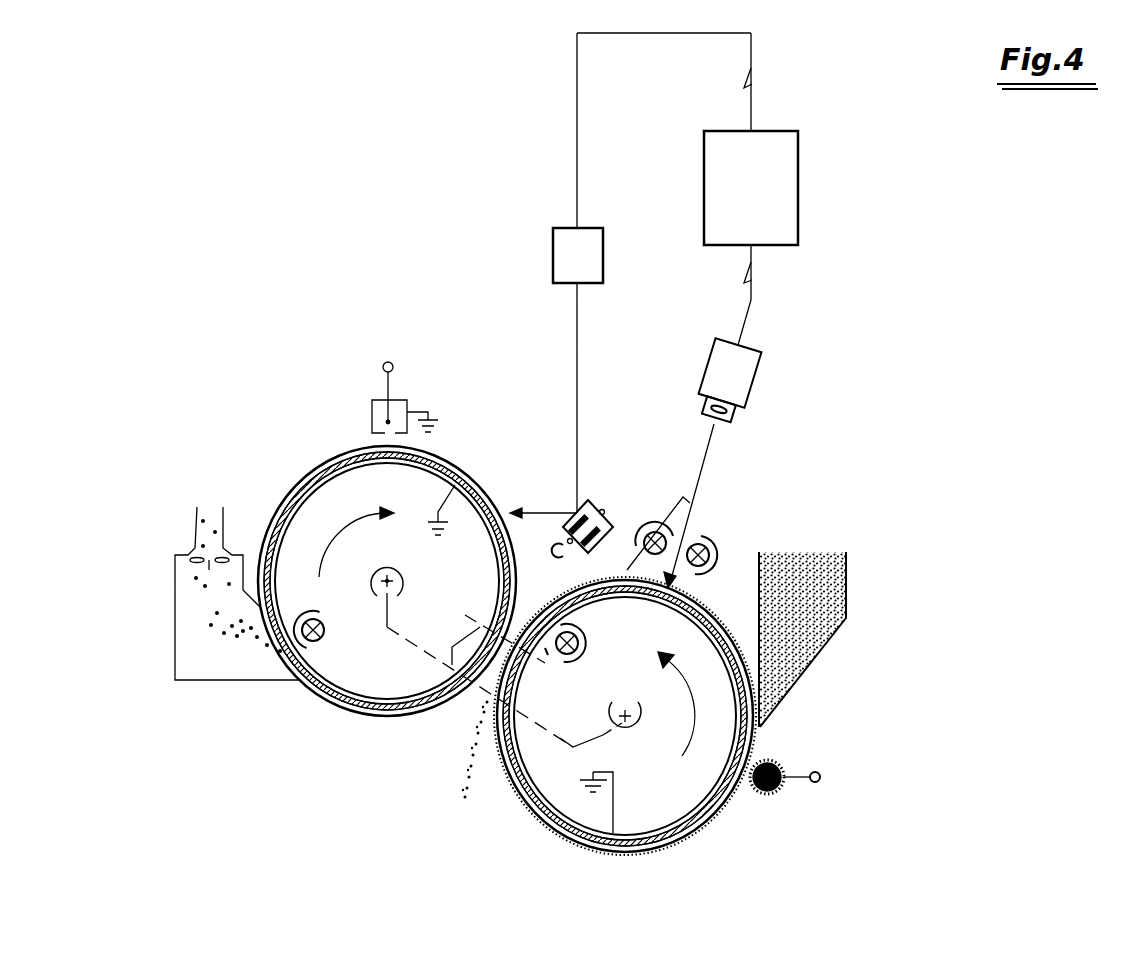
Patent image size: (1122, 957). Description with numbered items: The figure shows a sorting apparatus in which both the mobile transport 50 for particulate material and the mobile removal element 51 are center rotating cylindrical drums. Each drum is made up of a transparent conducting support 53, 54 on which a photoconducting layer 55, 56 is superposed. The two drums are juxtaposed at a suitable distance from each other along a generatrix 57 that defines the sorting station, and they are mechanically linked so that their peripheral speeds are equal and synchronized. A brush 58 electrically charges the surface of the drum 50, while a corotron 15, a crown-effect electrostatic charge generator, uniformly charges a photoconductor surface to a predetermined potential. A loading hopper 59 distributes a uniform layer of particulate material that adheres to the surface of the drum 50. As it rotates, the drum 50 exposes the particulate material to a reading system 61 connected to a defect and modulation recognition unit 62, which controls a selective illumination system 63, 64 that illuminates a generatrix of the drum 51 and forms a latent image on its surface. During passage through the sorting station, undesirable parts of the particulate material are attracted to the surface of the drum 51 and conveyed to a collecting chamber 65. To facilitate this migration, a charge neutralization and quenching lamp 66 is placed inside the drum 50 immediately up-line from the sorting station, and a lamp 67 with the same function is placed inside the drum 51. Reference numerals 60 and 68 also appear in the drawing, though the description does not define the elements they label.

The corotron 15 is at (407, 398).
The mobile transport 50 is at (667, 803).
The mobile removal element 51 is at (352, 492).
The transparent conducting support 53 is at (542, 820).
The transparent conducting support 54 is at (295, 502).
The photoconducting layer 55 is at (582, 843).
The photoconducting layer 56 is at (318, 473).
The generatrix 57 is at (452, 665).
The brush 58 is at (772, 795).
The loading hopper 59 is at (848, 622).
The erase lamps 60 is at (705, 540).
The reading system 61 is at (762, 378).
The defect and modulation recognition unit 62 is at (798, 208).
The selective illumination system 63 is at (603, 257).
The selective illumination system 64 is at (592, 512).
The collecting chamber 65 is at (195, 553).
The charge neutralization and quenching lamp 66 is at (590, 645).
The lamp 67 is at (335, 640).
The dashed transfer path 68 is at (392, 627).